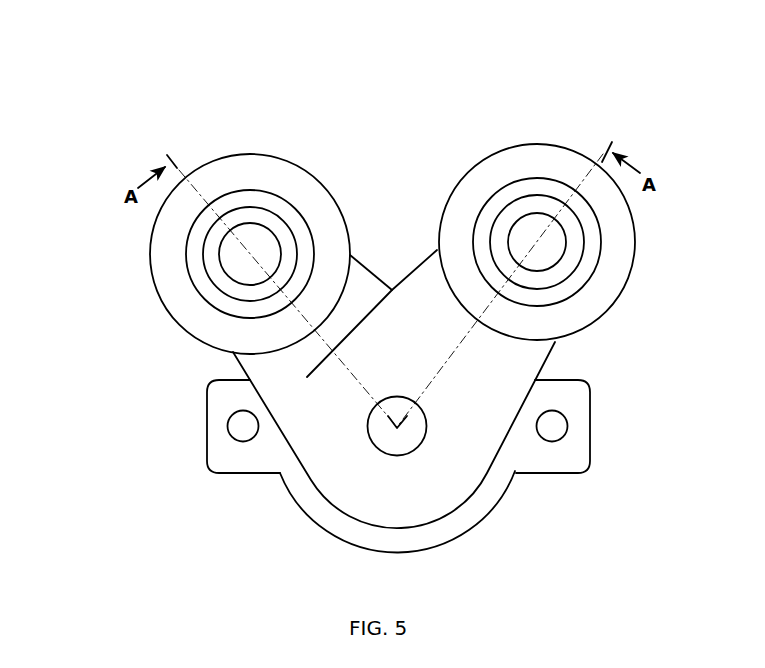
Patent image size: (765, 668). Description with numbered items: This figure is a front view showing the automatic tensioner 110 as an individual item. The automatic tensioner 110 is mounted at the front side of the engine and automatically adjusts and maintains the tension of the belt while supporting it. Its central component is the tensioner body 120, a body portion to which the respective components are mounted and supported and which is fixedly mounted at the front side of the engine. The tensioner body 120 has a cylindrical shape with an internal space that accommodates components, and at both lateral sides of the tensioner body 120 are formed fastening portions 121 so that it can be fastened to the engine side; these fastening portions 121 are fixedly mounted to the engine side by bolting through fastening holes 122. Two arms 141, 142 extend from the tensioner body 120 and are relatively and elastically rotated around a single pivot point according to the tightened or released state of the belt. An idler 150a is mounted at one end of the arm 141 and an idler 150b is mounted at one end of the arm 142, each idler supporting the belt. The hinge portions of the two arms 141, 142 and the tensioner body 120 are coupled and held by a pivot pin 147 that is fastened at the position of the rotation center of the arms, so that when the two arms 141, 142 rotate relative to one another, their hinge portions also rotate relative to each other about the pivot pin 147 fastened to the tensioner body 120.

The automatic tensioner 110 is at (252, 499).
The tensioner body 120 is at (489, 494).
The fastening portions 121 is at (206, 440).
The fastening holes 122 is at (237, 425).
The arm 141 is at (377, 285).
The arm 142 is at (502, 360).
The pivot pin 147 is at (413, 442).
The idler 150a is at (228, 153).
The idler 150b is at (530, 145).